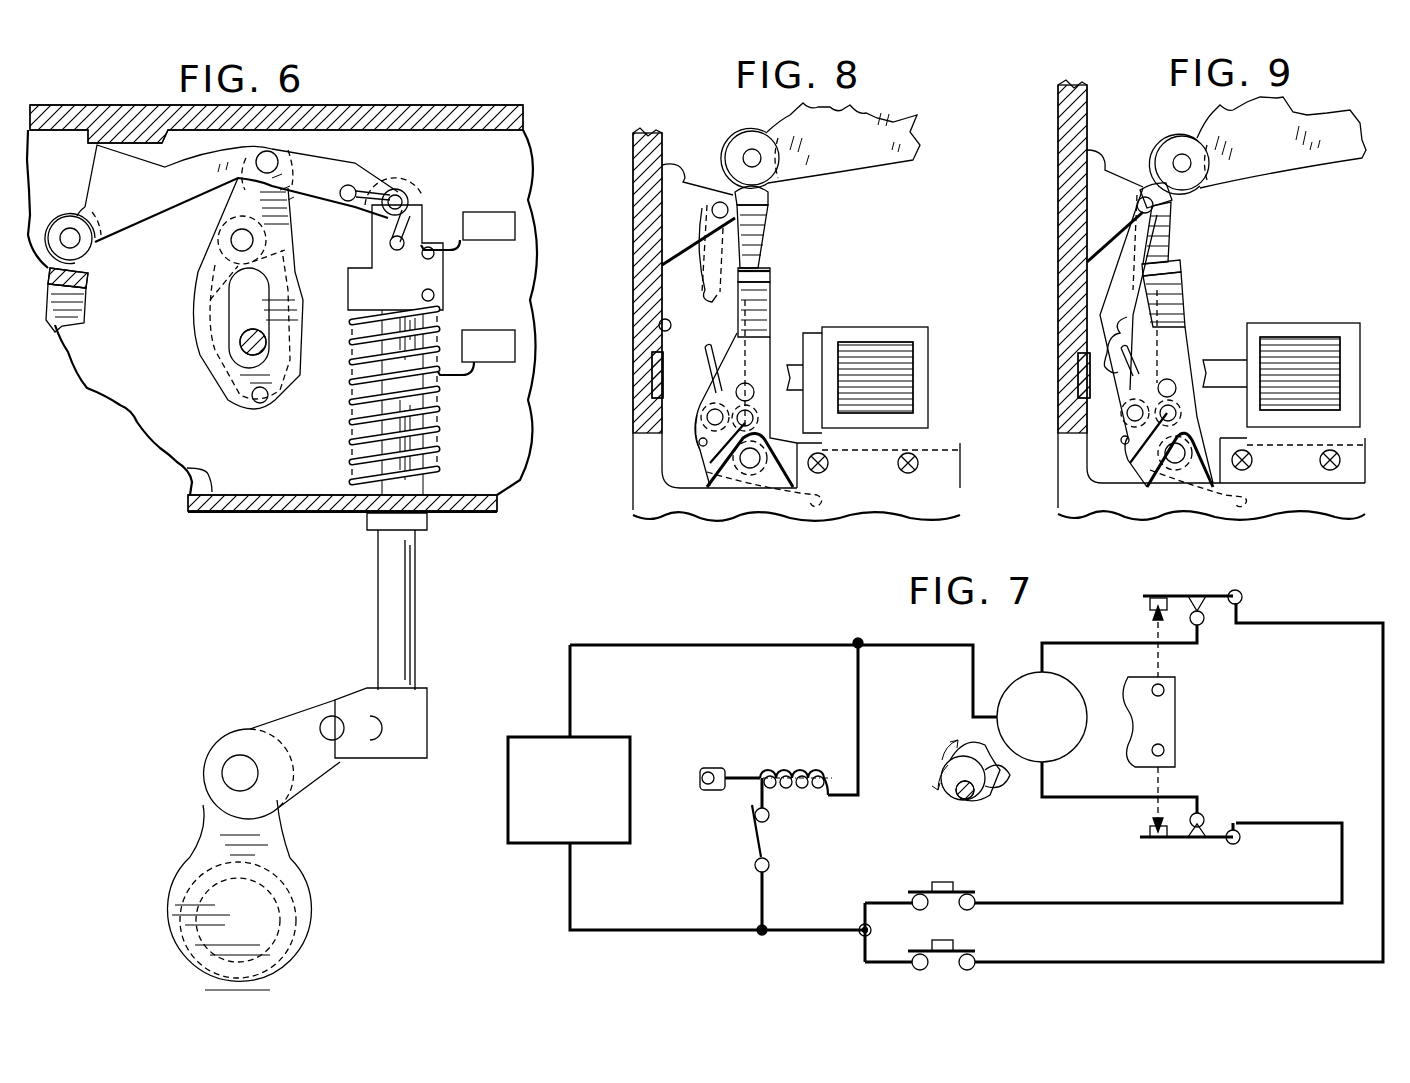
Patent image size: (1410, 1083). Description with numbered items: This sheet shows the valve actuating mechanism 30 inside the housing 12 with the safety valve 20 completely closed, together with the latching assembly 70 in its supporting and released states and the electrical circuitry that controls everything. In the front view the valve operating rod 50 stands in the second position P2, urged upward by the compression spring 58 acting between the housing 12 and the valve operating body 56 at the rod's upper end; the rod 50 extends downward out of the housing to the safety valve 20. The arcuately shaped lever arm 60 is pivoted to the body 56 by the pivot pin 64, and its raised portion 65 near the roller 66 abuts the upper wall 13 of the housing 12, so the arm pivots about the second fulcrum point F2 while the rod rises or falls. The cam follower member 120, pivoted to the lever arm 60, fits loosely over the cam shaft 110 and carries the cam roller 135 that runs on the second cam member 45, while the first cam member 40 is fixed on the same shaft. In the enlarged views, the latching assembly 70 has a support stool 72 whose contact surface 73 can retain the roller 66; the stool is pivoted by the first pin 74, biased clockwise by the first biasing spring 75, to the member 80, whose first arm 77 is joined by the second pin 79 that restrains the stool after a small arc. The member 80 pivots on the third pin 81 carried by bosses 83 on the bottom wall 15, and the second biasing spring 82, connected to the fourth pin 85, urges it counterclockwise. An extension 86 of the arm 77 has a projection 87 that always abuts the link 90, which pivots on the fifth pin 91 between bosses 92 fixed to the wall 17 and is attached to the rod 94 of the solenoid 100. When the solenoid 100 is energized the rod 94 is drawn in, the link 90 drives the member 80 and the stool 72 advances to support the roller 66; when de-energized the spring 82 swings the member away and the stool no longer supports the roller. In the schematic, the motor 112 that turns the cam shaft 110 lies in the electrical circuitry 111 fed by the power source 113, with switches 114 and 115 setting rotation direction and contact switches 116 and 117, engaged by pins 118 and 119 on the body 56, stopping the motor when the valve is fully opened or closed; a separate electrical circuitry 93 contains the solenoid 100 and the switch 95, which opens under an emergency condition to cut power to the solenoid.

In FIG. 6, the housing 12 is at (482, 190).
In FIG. 8, the housing 12 is at (916, 237).
In FIG. 9, the housing 12 is at (1303, 240).
In FIG. 6, the upper wall 13 is at (500, 128).
In FIG. 6, the bottom wall 15 is at (180, 463).
In FIG. 8, the bottom wall 15 is at (670, 484).
In FIG. 9, the bottom wall 15 is at (1095, 480).
In FIG. 8, the wall 17 is at (660, 326).
In FIG. 9, the wall 17 is at (1088, 346).
In FIG. 6, the safety valve 20 is at (186, 876).
In FIG. 6, the valve actuating mechanism 30 is at (331, 150).
In FIG. 7, the first cam member 40 is at (980, 800).
In FIG. 6, the second cam member 45 is at (190, 318).
In FIG. 7, the second cam member 45 is at (1010, 795).
In FIG. 6, the valve operating rod 50 is at (378, 600).
In FIG. 6, the valve operating body 56 is at (410, 290).
In FIG. 6, the compression spring 58 is at (440, 438).
In FIG. 6, the lever arm 60 is at (188, 172).
In FIG. 8, the lever arm 60 is at (855, 153).
In FIG. 9, the lever arm 60 is at (1280, 150).
In FIG. 6, the pivot pin 64 is at (395, 190).
In FIG. 6, the raised portion 65 is at (88, 186).
In FIG. 8, the roller 66 is at (732, 136).
In FIG. 9, the roller 66 is at (1163, 143).
In FIG. 8, the latching assembly 70 is at (784, 289).
In FIG. 9, the latching assembly 70 is at (1188, 291).
In FIG. 6, the support stool 72 is at (87, 312).
In FIG. 8, the support stool 72 is at (768, 225).
In FIG. 9, the support stool 72 is at (1172, 230).
In FIG. 6, the contact surface 73 is at (90, 278).
In FIG. 8, the contact surface 73 is at (770, 197).
In FIG. 9, the contact surface 73 is at (1173, 198).
In FIG. 8, the first pin 74 is at (707, 418).
In FIG. 9, the first pin 74 is at (1127, 413).
In FIG. 8, the first biasing spring 75 is at (708, 350).
In FIG. 9, the first biasing spring 75 is at (1120, 352).
In FIG. 8, the first arm 77 is at (822, 470).
In FIG. 9, the first arm 77 is at (1250, 470).
In FIG. 8, the second pin 79 is at (736, 392).
In FIG. 9, the second pin 79 is at (1175, 380).
In FIG. 8, the member 80 is at (805, 338).
In FIG. 9, the member 80 is at (1232, 336).
In FIG. 8, the third pin 81 is at (749, 468).
In FIG. 9, the third pin 81 is at (1177, 468).
In FIG. 8, the second biasing spring 82 is at (770, 523).
In FIG. 9, the second biasing spring 82 is at (1202, 505).
In FIG. 8, the bosses 83 is at (718, 488).
In FIG. 9, the bosses 83 is at (1148, 488).
In FIG. 8, the fourth pin 85 is at (700, 486).
In FIG. 9, the fourth pin 85 is at (1135, 487).
In FIG. 8, the extension 86 is at (771, 311).
In FIG. 9, the extension 86 is at (1185, 311).
In FIG. 8, the projection 87 is at (772, 260).
In FIG. 9, the projection 87 is at (1181, 265).
In FIG. 8, the link 90 is at (712, 258).
In FIG. 9, the link 90 is at (1115, 275).
In FIG. 8, the fifth pin 91 is at (712, 210).
In FIG. 9, the fifth pin 91 is at (1137, 205).
In FIG. 8, the bosses 92 is at (662, 165).
In FIG. 9, the bosses 92 is at (1087, 150).
In FIG. 7, the electrical circuitry 93 is at (783, 807).
In FIG. 8, the rod 94 is at (878, 465).
In FIG. 9, the rod 94 is at (1292, 460).
In FIG. 7, the switch 95 is at (752, 838).
In FIG. 8, the solenoid 100 is at (897, 372).
In FIG. 9, the solenoid 100 is at (1305, 345).
In FIG. 7, the solenoid 100 is at (779, 770).
In FIG. 6, the cam shaft 110 is at (243, 345).
In FIG. 7, the cam shaft 110 is at (965, 802).
In FIG. 7, the electrical circuitry 111 is at (1182, 958).
In FIG. 7, the motor 112 is at (1012, 676).
In FIG. 7, the power source 113 is at (597, 737).
In FIG. 7, the switch 114 is at (940, 884).
In FIG. 7, the switch 115 is at (935, 944).
In FIG. 6, the contact switch 116 is at (510, 357).
In FIG. 7, the contact switch 116 is at (1180, 840).
In FIG. 6, the contact switch 117 is at (510, 238).
In FIG. 7, the contact switch 117 is at (1222, 592).
In FIG. 6, the pin 118 is at (435, 298).
In FIG. 7, the pin 118 is at (1165, 750).
In FIG. 6, the pin 119 is at (435, 258).
In FIG. 7, the pin 119 is at (1165, 690).
In FIG. 6, the cam follower member 120 is at (288, 241).
In FIG. 6, the cam roller 135 is at (226, 226).
In FIG. 6, the second fulcrum point F2 is at (80, 240).
In FIG. 6, the second position P2 is at (405, 200).